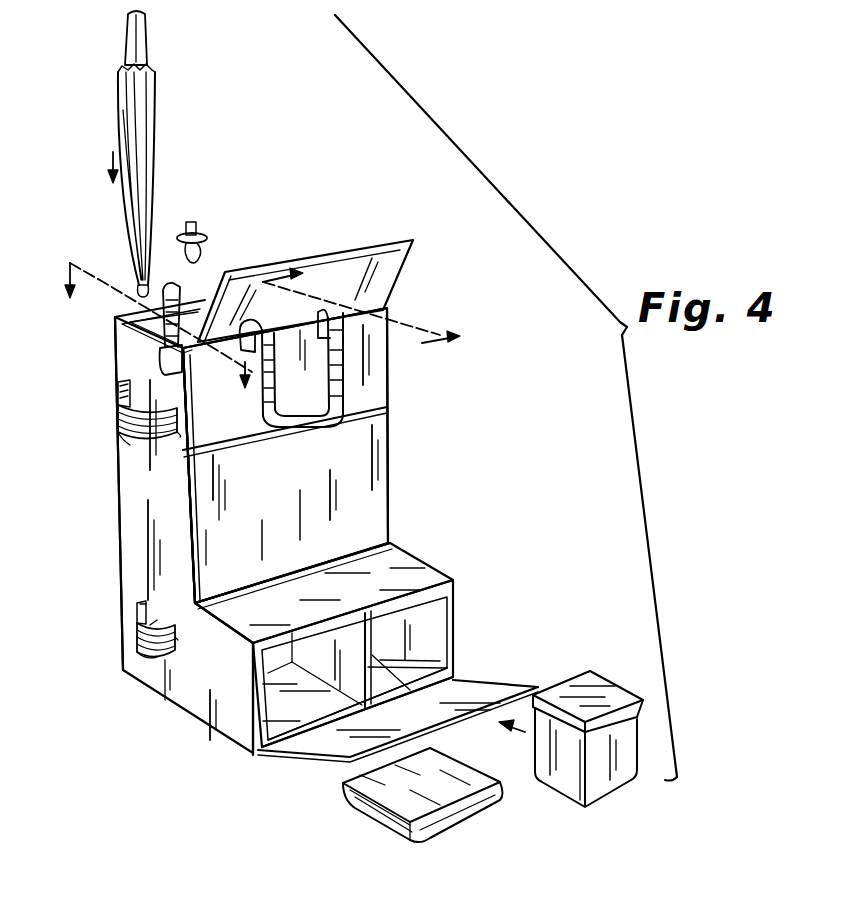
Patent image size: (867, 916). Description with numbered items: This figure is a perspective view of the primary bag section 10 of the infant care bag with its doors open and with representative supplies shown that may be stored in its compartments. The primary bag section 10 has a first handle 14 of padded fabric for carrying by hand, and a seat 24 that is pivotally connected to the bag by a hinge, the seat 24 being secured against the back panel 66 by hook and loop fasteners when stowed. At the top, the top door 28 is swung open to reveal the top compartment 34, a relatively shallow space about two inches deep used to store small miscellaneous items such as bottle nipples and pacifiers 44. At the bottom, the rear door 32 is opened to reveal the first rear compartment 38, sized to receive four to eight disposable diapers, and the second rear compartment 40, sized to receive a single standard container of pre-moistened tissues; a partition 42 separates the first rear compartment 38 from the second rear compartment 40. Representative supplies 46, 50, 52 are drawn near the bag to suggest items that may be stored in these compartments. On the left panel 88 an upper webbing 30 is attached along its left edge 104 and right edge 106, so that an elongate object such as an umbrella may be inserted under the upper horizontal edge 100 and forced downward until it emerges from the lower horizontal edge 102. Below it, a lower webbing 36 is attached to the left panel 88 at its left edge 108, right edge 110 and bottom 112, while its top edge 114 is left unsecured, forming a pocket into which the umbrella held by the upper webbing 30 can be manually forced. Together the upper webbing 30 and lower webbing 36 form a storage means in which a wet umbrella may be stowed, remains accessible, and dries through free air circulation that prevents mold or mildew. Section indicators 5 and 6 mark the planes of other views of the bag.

The primary bag section 10 is at (404, 433).
The first handle 14 is at (256, 425).
The seat 24 is at (363, 500).
The top door 28 is at (395, 262).
The upper webbing 30 is at (118, 415).
The rear door 32 is at (323, 747).
The top compartment 34 is at (200, 283).
The lower webbing 36 is at (140, 636).
The first rear compartment 38 is at (277, 712).
The second rear compartment 40 is at (427, 627).
The partition 42 is at (357, 643).
The pacifiers 44 is at (200, 227).
The umbrella 46 is at (152, 97).
The folded blanket 50 is at (380, 830).
The small box 52 is at (610, 773).
The back panel 66 is at (380, 373).
The left panel 88 is at (130, 532).
The upper horizontal edge 100 is at (143, 407).
The lower horizontal edge 102 is at (130, 445).
The left edge 104 is at (130, 385).
The right edge 106 is at (180, 437).
The left edge 108 is at (147, 610).
The right edge 110 is at (173, 637).
The bottom 112 is at (157, 657).
The top edge 114 is at (157, 620).
The section line 5- 5 is at (156, 345).
The section line 6- 6 is at (370, 307).